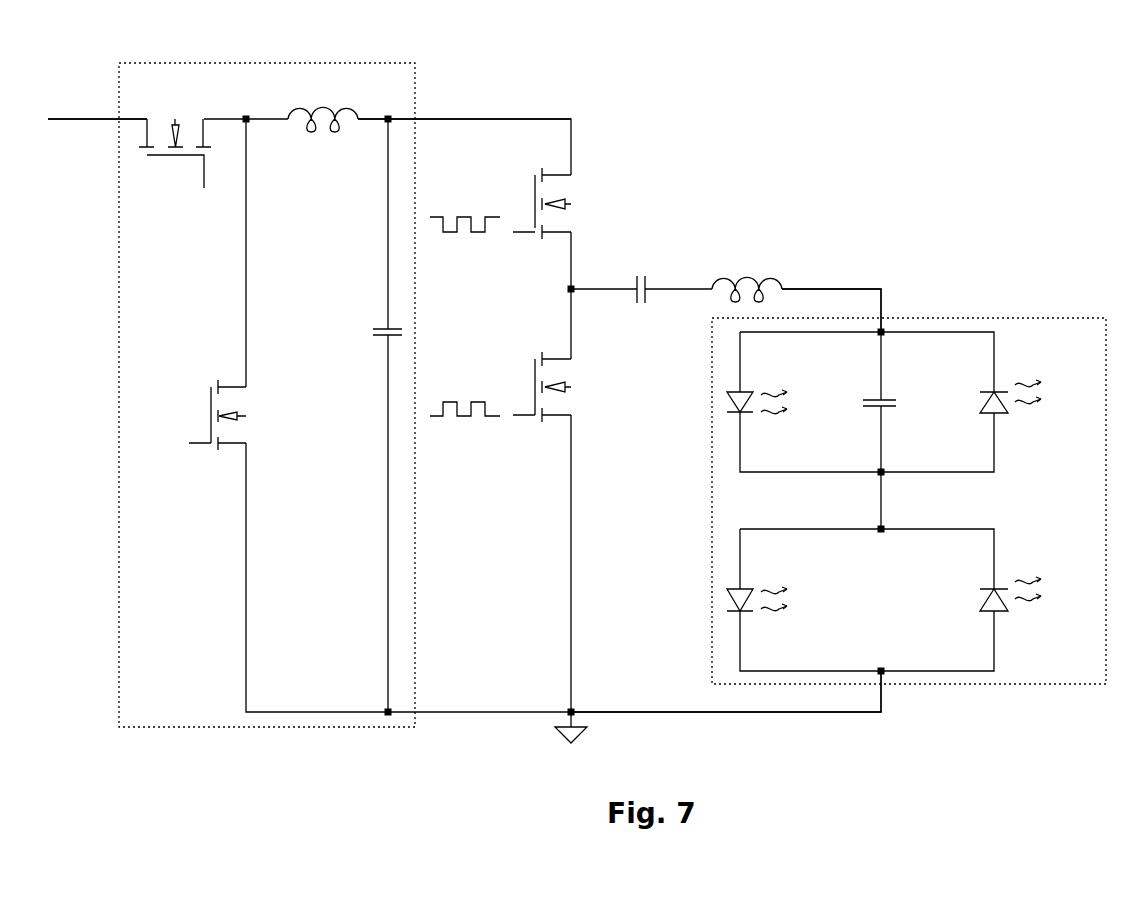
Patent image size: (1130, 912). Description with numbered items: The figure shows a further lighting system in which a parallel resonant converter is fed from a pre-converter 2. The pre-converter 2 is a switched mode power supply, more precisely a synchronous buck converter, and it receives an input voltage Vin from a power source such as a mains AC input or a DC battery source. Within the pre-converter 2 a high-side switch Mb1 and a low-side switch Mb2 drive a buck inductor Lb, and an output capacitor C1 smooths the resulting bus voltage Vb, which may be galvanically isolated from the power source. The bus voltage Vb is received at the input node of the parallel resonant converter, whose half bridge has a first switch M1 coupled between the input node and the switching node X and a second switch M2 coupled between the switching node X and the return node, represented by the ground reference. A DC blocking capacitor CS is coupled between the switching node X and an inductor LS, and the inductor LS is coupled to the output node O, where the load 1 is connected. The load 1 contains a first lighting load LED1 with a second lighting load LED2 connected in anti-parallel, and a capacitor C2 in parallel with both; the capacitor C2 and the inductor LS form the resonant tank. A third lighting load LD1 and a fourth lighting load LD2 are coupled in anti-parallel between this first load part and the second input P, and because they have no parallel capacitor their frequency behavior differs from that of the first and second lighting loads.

The load 1 is at (909, 483).
The pre-converter 2 is at (267, 377).
The input voltage Vin is at (97, 100).
The boost high-side transistor Mb1 is at (175, 135).
The boost low-side transistor Mb2 is at (257, 415).
The boost inductor Lb is at (323, 105).
The boost output capacitor C1 is at (369, 317).
The bus voltage Vb is at (464, 101).
The first switch M1 is at (527, 203).
The second switch M2 is at (527, 387).
The switching node X is at (558, 290).
The DC blocking capacitor CS is at (637, 272).
The inductor LS is at (747, 272).
The output node O is at (831, 294).
The capacitor C2 is at (895, 377).
The first lighting load LED1 is at (804, 402).
The second lighting load LED2 is at (980, 402).
The third lighting load LD1 is at (804, 600).
The fourth lighting load LD2 is at (971, 600).
The second input P is at (726, 712).